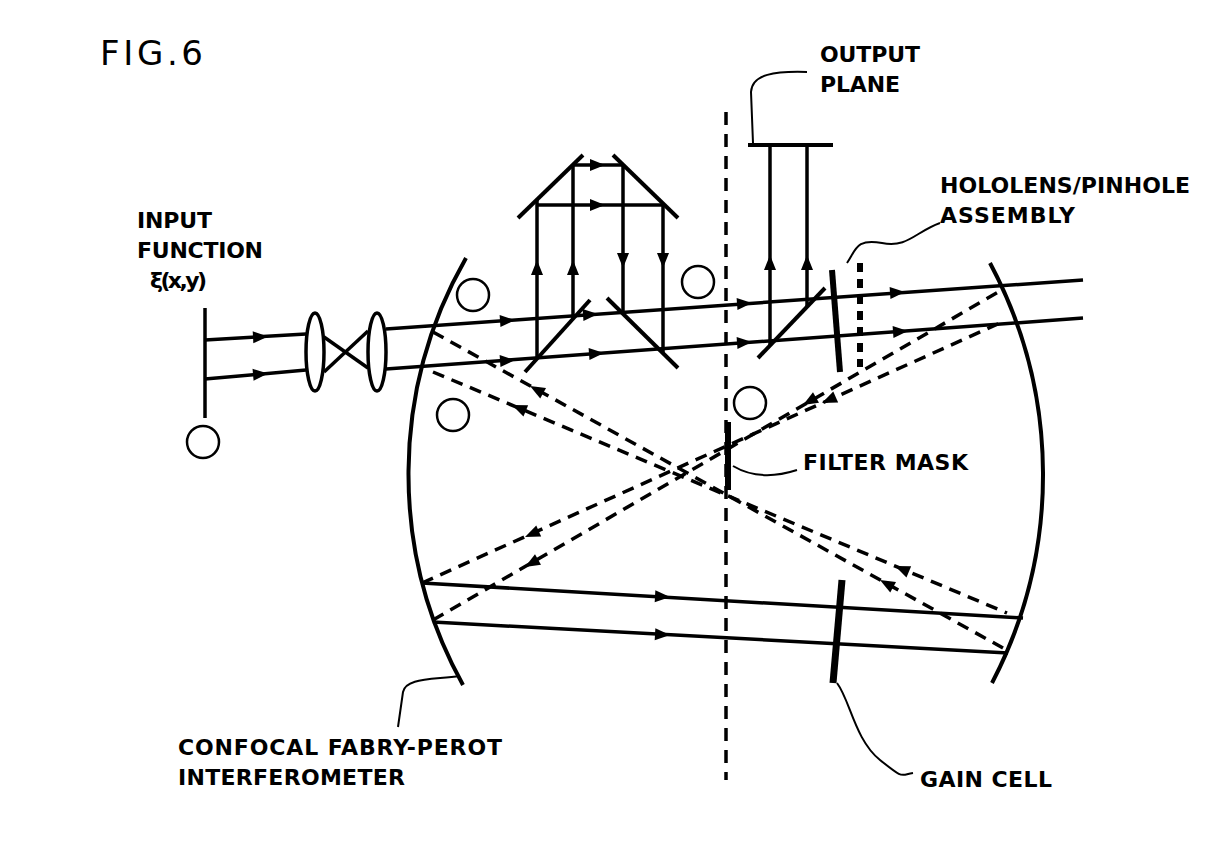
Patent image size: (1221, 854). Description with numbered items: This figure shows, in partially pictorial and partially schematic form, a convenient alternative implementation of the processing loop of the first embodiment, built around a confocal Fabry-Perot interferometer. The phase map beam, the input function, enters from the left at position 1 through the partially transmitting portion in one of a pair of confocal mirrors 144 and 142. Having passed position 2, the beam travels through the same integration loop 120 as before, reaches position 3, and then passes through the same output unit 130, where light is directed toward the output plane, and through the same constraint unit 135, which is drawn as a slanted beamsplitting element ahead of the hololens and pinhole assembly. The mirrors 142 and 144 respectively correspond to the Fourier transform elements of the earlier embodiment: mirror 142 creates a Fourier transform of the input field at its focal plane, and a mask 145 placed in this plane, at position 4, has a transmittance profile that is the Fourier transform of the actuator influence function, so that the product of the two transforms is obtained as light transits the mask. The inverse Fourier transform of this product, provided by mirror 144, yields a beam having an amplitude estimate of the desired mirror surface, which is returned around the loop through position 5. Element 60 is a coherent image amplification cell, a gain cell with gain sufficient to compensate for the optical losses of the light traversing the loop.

The input plane position 1 is at (203, 383).
The position 2 (after input lenses) 2 is at (473, 295).
The position 3 (after fold module) 3 is at (698, 282).
The position 4 (filter mask plane) 4 is at (750, 403).
The position 5 (return beam) 5 is at (453, 415).
The coherent image amplification cell 60 is at (840, 673).
The integration loop 120 is at (649, 158).
The output unit 130 is at (834, 244).
The constraint unit 135 is at (830, 353).
The confocal mirror 142 is at (1042, 443).
The confocal mirror 144 is at (408, 478).
The mask 145 is at (728, 468).